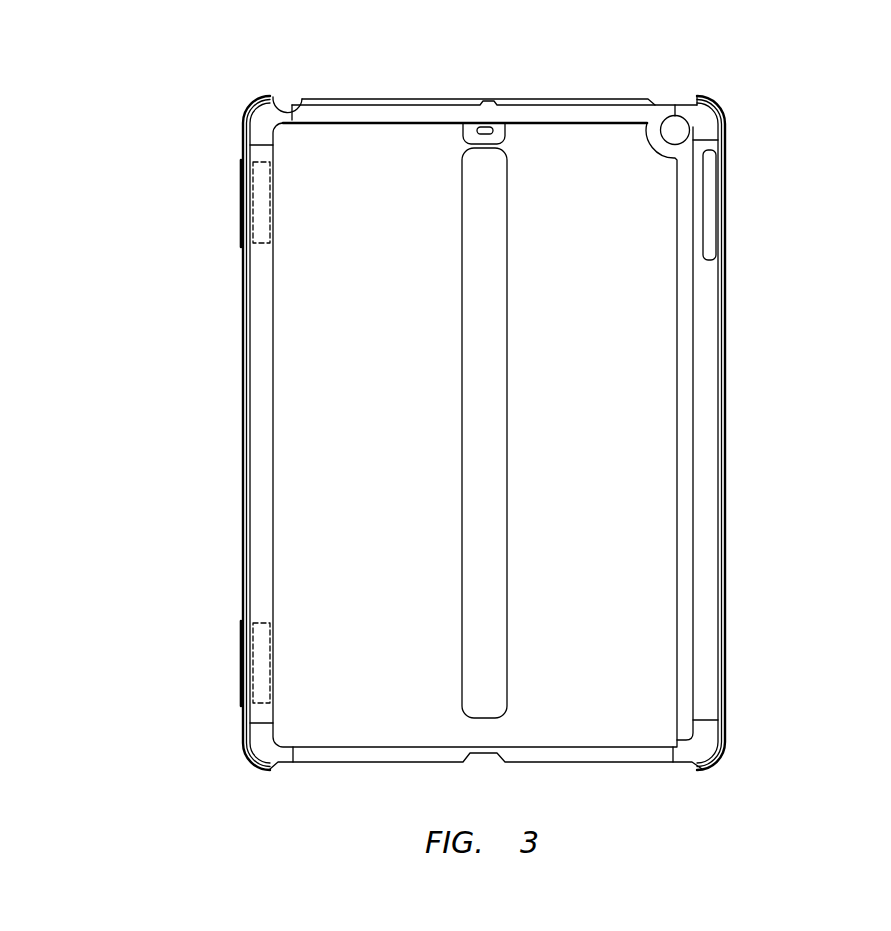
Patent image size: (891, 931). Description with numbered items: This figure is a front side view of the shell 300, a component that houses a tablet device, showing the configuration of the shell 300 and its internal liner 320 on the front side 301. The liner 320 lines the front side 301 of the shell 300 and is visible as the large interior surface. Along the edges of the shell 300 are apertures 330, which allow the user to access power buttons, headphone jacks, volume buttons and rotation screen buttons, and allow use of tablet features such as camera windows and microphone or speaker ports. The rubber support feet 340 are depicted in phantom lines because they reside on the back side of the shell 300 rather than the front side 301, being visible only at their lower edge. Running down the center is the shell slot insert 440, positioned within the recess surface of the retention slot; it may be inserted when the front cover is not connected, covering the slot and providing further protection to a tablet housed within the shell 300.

The shell 300 is at (568, 94).
The front side 301 is at (727, 375).
The liner 320 is at (625, 543).
The apertures 330 is at (288, 104).
The rubber support feet 340 is at (242, 201).
The shell slot insert 440 is at (478, 177).